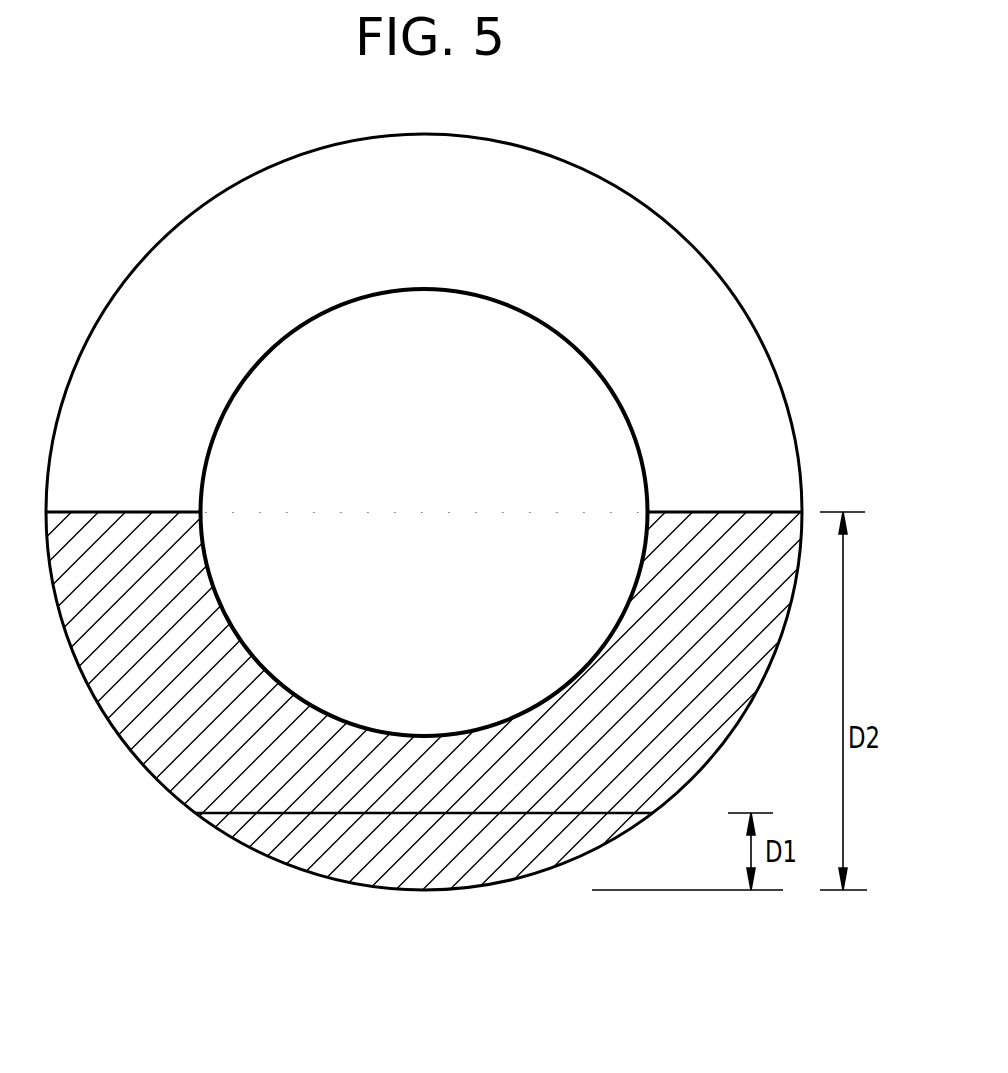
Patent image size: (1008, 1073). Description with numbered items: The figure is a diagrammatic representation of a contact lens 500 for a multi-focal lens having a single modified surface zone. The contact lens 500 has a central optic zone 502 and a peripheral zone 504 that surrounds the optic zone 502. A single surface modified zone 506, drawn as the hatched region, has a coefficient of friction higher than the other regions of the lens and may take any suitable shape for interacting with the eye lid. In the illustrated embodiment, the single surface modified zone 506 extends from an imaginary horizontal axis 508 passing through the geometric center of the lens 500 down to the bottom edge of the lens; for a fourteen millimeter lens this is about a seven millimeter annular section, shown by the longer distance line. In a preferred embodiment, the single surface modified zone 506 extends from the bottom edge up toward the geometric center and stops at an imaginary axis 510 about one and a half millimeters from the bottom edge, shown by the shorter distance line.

The contact lens 500 is at (620, 167).
The optic zone 502 is at (298, 360).
The peripheral zone 504 is at (236, 215).
The single surface modified zone 506 is at (137, 730).
The imaginary horizontal axis 508 is at (708, 512).
The imaginary axis 510 is at (522, 811).